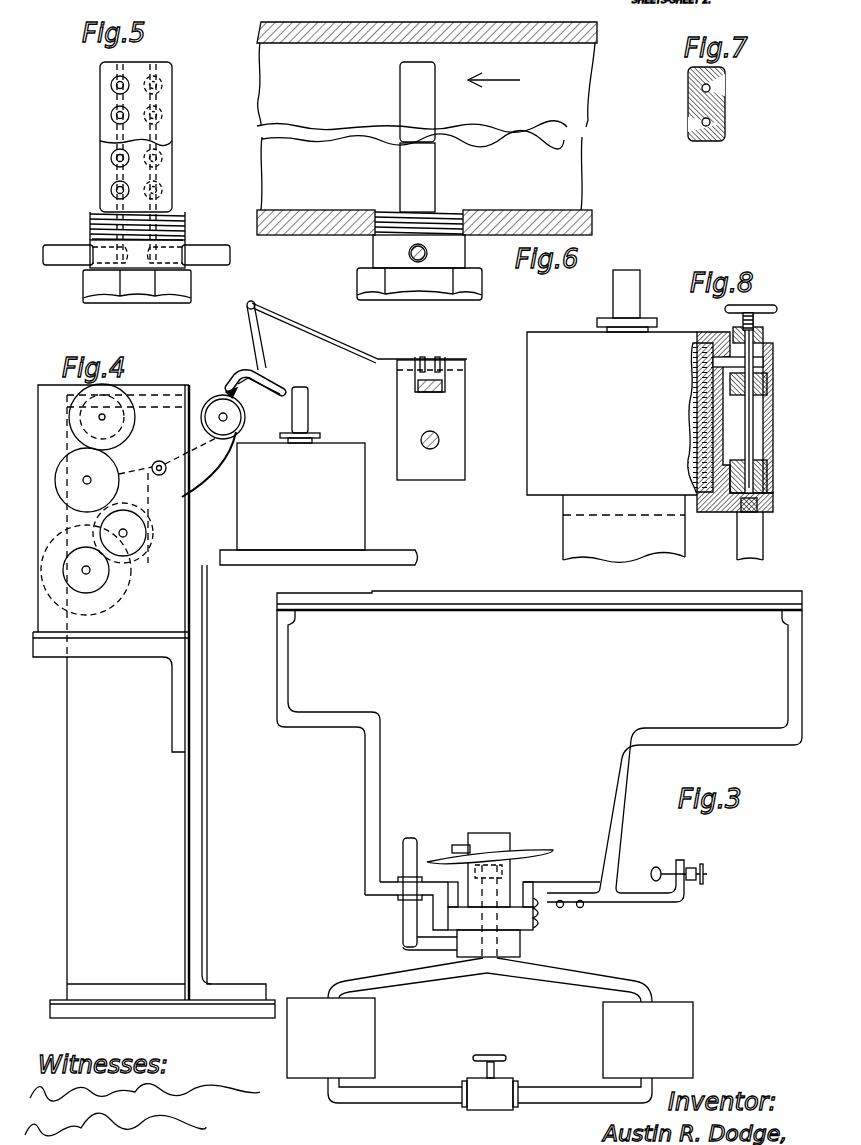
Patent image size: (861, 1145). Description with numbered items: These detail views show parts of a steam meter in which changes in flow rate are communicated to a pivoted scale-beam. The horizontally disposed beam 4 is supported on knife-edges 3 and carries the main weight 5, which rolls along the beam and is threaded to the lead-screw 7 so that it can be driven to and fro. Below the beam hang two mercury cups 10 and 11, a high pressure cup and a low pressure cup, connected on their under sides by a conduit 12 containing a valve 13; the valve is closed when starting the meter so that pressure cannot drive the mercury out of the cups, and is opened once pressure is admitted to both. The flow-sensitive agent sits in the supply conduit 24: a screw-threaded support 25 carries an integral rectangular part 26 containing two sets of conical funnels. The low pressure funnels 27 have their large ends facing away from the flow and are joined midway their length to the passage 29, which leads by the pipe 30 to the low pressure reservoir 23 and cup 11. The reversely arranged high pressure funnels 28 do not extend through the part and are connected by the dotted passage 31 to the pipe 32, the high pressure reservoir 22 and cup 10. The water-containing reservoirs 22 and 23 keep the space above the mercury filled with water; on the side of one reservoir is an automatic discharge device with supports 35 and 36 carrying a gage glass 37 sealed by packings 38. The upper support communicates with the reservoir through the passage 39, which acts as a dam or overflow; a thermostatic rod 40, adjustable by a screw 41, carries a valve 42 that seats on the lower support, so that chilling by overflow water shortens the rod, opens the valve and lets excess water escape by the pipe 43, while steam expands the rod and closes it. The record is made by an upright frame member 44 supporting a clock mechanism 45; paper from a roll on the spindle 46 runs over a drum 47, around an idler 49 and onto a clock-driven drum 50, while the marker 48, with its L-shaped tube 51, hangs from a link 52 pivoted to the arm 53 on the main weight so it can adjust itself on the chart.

In FIG. 3, the knife-edges 3 is at (493, 842).
In FIG. 3, the beam 4 is at (521, 606).
In FIG. 4, the main weight 5 is at (431, 418).
In FIG. 4, the lead-screw 7 is at (441, 440).
In FIG. 3, the mercury cup 10 is at (364, 1027).
In FIG. 3, the mercury cup 11 is at (673, 1027).
In FIG. 3, the conduit 12 is at (400, 1103).
In FIG. 3, the valve 13 is at (501, 1085).
In FIG. 4, the water-containing reservoir 22 is at (319, 476).
In FIG. 8, the water-containing reservoir 23 is at (620, 447).
In FIG. 6, the supply conduit 24 is at (572, 63).
In FIG. 5, the support 25 is at (176, 228).
In FIG. 6, the support 25 is at (445, 219).
In FIG. 5, the rectangular part 26 is at (163, 106).
In FIG. 6, the rectangular part 26 is at (410, 82).
In FIG. 7, the rectangular part 26 is at (691, 142).
In FIG. 5, the low pressure funnels 27 is at (111, 115).
In FIG. 7, the low pressure funnels 27 is at (691, 124).
In FIG. 5, the high pressure funnels 28 is at (160, 84).
In FIG. 7, the high pressure funnels 28 is at (718, 88).
In FIG. 5, the passage 29 is at (118, 204).
In FIG. 7, the passage 29 is at (716, 142).
In FIG. 5, the pipe 30 is at (58, 266).
In FIG. 8, the pipe 30 is at (615, 293).
In FIG. 5, the passage 31 is at (163, 168).
In FIG. 5, the pipe 32 is at (210, 266).
In FIG. 6, the pipe 32 is at (428, 253).
In FIG. 8, the upper support 35 is at (770, 358).
In FIG. 8, the lower support 36 is at (772, 496).
In FIG. 8, the gage glass 37 is at (766, 430).
In FIG. 8, the packings 38 is at (770, 390).
In FIG. 8, the passage 39 is at (735, 360).
In FIG. 8, the thermostatic rod 40 is at (756, 449).
In FIG. 8, the screw 41 is at (768, 337).
In FIG. 8, the valve 42 is at (742, 506).
In FIG. 8, the pipe 43 is at (763, 550).
In FIG. 4, the upright frame member 44 is at (154, 701).
In FIG. 4, the clock mechanism 45 is at (112, 474).
In FIG. 4, the spindle 46 is at (102, 415).
In FIG. 4, the drum 47 is at (219, 406).
In FIG. 4, the marker 48 is at (238, 377).
In FIG. 4, the idler 49 is at (165, 474).
In FIG. 4, the drum 50 is at (140, 548).
In FIG. 4, the L-shaped tube 51 is at (238, 398).
In FIG. 4, the link 52 is at (261, 352).
In FIG. 4, the arm 53 is at (288, 315).